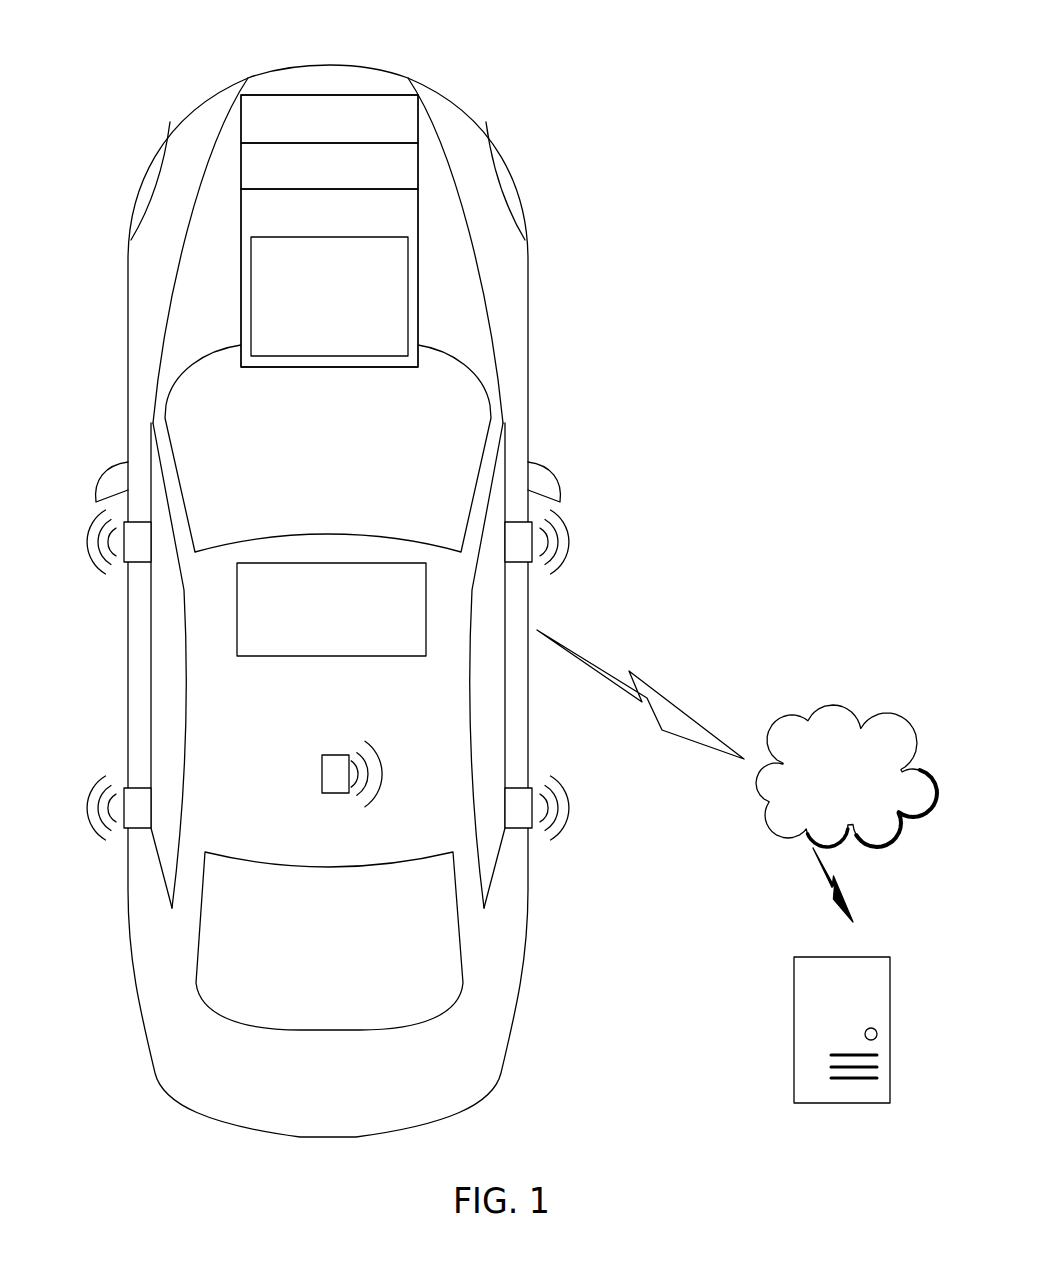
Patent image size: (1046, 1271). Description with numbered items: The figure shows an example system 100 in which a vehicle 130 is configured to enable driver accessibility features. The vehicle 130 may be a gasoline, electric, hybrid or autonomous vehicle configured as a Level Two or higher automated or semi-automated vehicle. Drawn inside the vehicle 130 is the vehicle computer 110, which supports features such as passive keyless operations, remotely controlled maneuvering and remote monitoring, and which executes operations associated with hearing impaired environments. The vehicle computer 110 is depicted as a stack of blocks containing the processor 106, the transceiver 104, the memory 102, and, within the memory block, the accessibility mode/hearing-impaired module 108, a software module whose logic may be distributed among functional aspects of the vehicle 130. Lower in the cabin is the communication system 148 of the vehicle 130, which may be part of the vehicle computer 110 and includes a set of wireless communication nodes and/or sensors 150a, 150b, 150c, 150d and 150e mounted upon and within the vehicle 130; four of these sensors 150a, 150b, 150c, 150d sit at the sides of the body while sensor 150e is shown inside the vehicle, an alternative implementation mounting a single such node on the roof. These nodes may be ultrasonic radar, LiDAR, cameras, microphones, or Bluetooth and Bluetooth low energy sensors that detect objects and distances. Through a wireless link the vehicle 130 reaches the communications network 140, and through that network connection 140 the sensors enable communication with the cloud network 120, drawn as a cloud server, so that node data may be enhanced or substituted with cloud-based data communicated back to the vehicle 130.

The system 100 is at (806, 59).
The vehicle 130 is at (158, 66).
The vehicle computer 110 is at (241, 250).
The processor 106 is at (329, 119).
The transceiver 104 is at (329, 166).
The memory 102 is at (329, 278).
The accessibility mode/hearing-impaired module 108 is at (329, 296).
The communication system 148 is at (322, 657).
The communication node/sensor 150a is at (122, 563).
The communication node/sensor 150b is at (122, 829).
The communication node/sensor 150c is at (535, 563).
The communication node/sensor 150d is at (535, 829).
The communication node/sensor 150e is at (322, 776).
The communications network 140 is at (864, 732).
The cloud network 120 is at (792, 937).